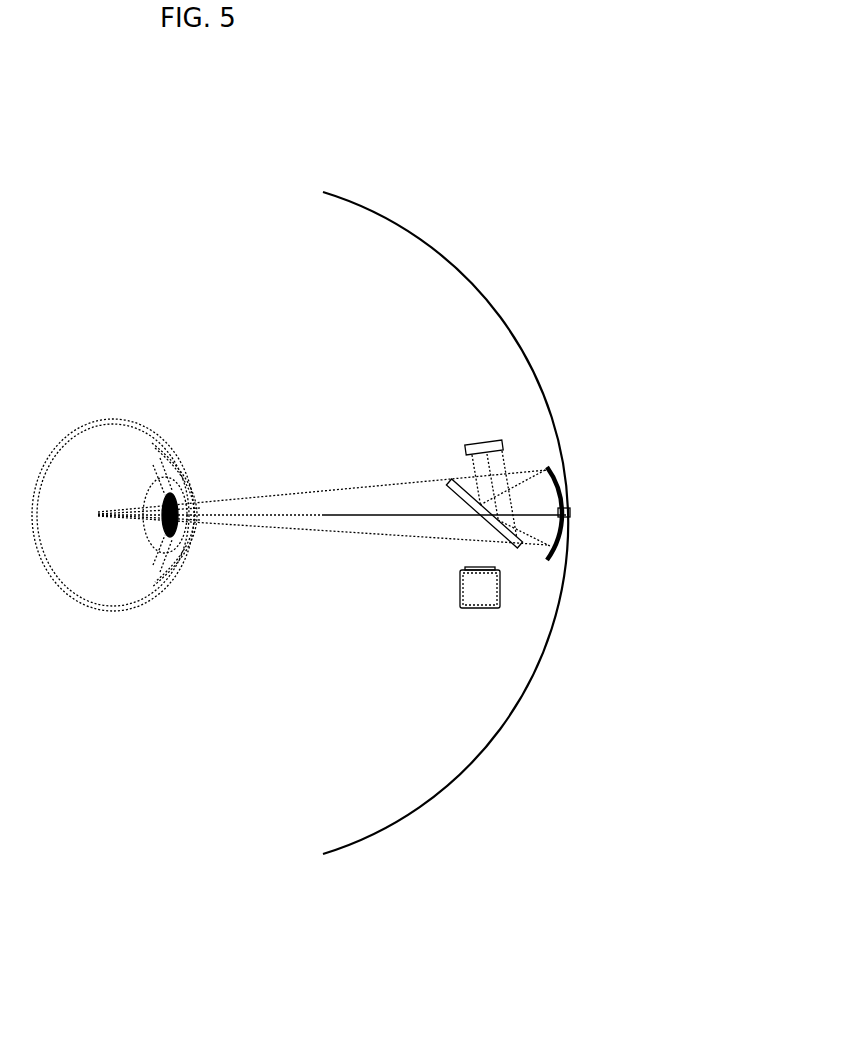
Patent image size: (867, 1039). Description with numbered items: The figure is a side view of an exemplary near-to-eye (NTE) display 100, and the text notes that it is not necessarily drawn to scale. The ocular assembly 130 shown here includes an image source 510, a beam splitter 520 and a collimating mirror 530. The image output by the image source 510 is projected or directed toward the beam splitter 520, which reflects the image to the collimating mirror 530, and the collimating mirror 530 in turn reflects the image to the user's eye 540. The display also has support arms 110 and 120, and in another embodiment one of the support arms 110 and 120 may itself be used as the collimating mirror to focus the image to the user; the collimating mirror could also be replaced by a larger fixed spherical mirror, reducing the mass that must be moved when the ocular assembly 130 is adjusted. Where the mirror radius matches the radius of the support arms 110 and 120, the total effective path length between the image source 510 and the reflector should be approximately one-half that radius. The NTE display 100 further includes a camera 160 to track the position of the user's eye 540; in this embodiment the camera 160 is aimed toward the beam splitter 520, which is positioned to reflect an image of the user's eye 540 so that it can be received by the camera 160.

The NTE display 100 is at (553, 57).
The support arm 110 is at (445, 523).
The support arm 120 is at (387, 517).
The ocular assembly 130 is at (404, 404).
The camera 160 is at (492, 610).
The image source 510 is at (497, 444).
The beam splitter 520 is at (488, 525).
The collimating mirror 530 is at (572, 513).
The user's eye 540 is at (138, 610).